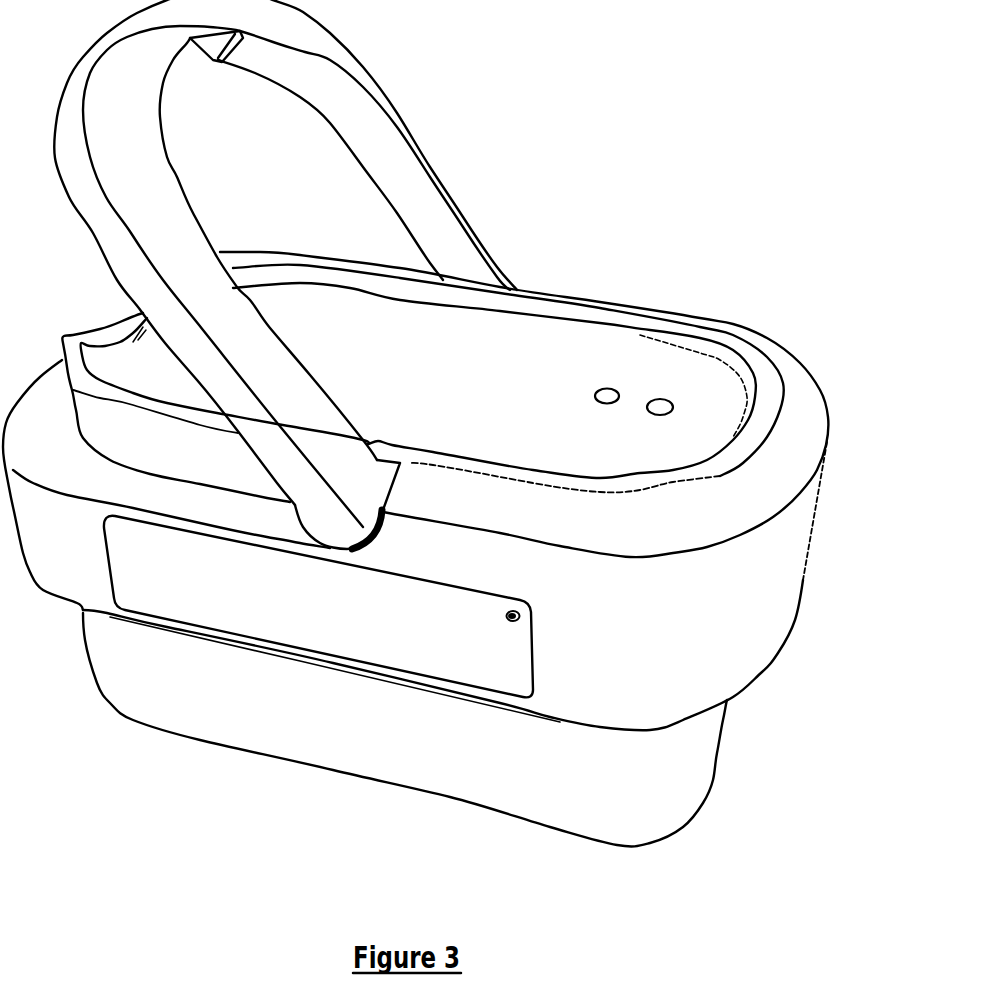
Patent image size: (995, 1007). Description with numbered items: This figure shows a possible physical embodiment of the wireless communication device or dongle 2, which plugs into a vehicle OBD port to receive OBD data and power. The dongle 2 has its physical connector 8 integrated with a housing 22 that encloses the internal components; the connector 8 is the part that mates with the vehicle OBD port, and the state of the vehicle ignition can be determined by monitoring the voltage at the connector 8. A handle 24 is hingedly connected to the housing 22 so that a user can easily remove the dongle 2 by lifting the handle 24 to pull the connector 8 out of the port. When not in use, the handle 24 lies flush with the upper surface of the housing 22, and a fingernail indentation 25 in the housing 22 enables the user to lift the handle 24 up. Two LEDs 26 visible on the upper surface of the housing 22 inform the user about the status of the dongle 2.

The dongle 2 is at (454, 423).
The physical connector 8 is at (707, 787).
The housing 22 is at (778, 540).
The handle 24 is at (427, 207).
The fingernail indentation 25 is at (118, 330).
The LEDs 26 is at (607, 380).